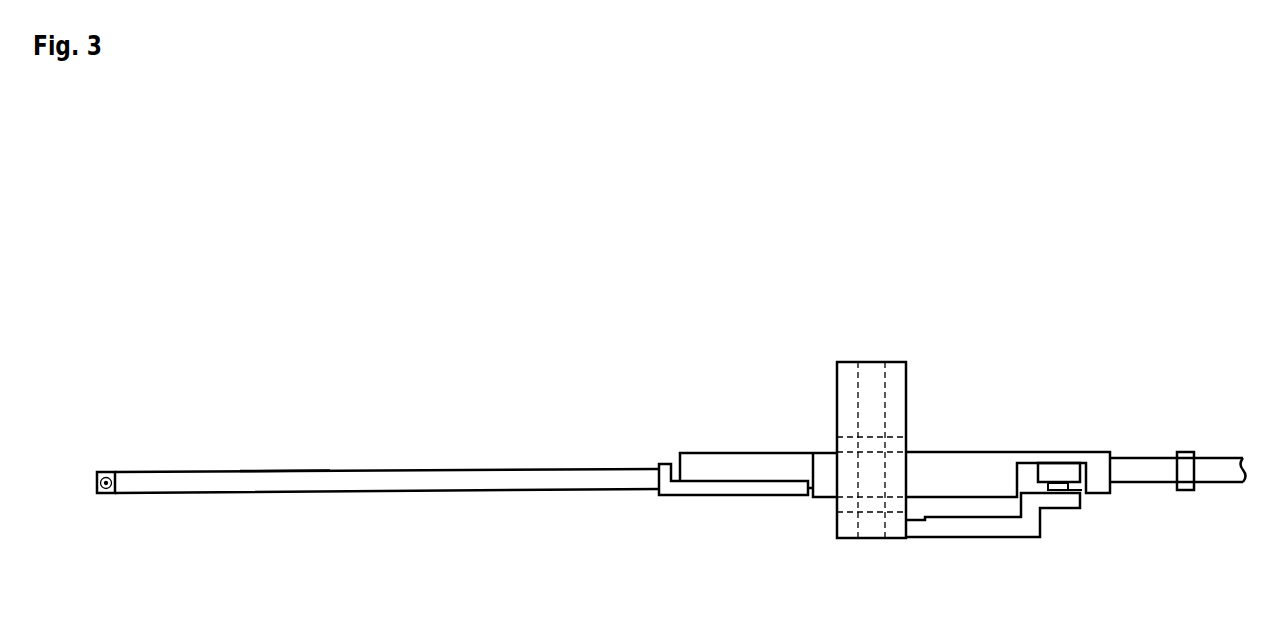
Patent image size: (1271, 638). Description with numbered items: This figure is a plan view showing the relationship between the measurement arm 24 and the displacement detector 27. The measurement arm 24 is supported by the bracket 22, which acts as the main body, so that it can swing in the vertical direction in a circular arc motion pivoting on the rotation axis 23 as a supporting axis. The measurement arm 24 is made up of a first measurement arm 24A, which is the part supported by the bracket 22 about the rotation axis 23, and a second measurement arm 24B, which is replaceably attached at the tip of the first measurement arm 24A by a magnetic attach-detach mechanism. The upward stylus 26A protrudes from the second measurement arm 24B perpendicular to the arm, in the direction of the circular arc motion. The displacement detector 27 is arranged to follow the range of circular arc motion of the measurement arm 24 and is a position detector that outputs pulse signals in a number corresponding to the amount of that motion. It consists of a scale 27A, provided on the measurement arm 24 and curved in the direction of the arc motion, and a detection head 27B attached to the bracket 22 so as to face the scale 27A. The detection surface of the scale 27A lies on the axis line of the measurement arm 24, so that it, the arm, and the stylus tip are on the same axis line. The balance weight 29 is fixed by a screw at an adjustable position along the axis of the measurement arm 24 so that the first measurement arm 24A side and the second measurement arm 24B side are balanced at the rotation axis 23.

The bracket 22 is at (853, 361).
The rotation axis 23 is at (851, 539).
The measurement arm 24 is at (440, 491).
The first measurement arm 24A is at (958, 463).
The second measurement arm 24B is at (285, 470).
The upward stylus 26A is at (103, 477).
The displacement detector 27 is at (1138, 352).
The scale 27A is at (1052, 470).
The detection head 27B is at (1075, 490).
The balance weight 29 is at (1183, 492).